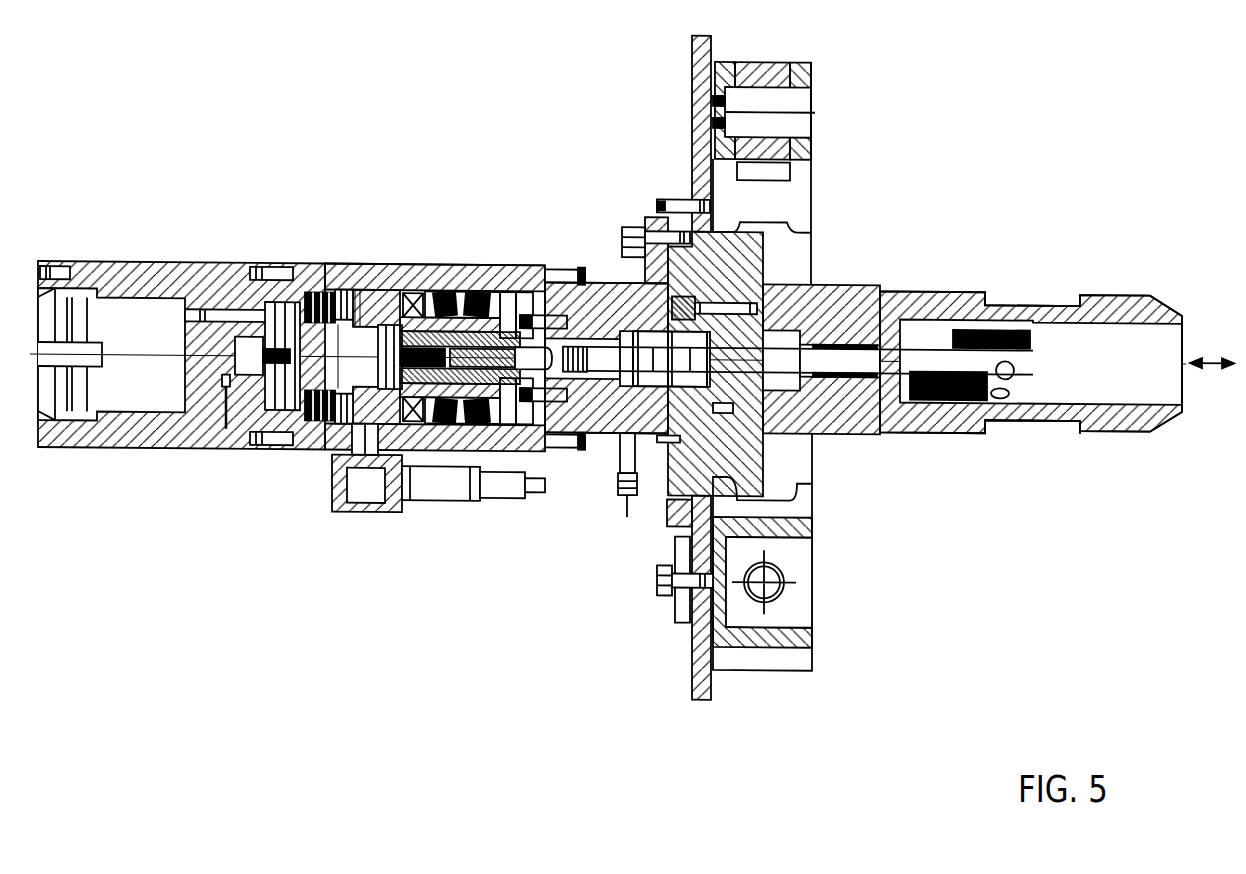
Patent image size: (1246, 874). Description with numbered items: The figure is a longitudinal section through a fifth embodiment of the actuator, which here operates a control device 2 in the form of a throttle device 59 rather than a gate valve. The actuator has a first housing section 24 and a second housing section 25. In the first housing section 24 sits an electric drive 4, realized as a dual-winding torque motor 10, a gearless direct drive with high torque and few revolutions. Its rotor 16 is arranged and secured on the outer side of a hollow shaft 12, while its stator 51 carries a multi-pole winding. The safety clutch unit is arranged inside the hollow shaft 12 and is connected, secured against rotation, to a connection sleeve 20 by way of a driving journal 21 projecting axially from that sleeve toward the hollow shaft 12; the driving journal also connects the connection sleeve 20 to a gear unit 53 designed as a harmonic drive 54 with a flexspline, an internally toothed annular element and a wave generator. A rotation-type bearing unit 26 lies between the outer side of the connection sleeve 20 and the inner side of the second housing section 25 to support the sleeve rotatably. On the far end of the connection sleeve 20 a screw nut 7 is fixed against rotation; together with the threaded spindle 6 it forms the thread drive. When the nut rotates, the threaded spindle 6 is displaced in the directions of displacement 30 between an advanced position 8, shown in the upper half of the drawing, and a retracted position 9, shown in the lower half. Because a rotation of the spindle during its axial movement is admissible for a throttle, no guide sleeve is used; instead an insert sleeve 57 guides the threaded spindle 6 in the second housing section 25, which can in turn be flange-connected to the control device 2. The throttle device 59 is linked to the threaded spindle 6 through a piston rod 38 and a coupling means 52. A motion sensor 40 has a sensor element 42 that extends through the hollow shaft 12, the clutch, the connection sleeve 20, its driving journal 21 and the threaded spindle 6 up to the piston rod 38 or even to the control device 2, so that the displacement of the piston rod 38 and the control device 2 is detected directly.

The control device 2 is at (957, 265).
The electric drive 4 is at (298, 260).
The threaded spindle 6 is at (437, 416).
The screw nut 7 is at (515, 296).
The advanced position 8 is at (1025, 323).
The retracted position 9 is at (958, 397).
The torque motor 10 is at (328, 272).
The hollow shaft 12 is at (330, 377).
The rotor 16 is at (365, 297).
The connection sleeve 20 is at (418, 297).
The driving journal 21 is at (405, 397).
The first housing section 24 is at (440, 271).
The second housing section 25 is at (603, 285).
The rotation-type bearing unit 26 is at (470, 296).
The directions of displacement 30 is at (1210, 347).
The piston rod 38 is at (830, 343).
The motion sensor 40 is at (235, 360).
The sensor element 42 is at (252, 423).
The stator 51 is at (333, 417).
The coupling means 52 is at (690, 384).
The gear unit 53 is at (369, 243).
The harmonic drive 54 is at (358, 302).
The insert sleeve 57 is at (575, 385).
The throttle device 59 is at (1002, 424).